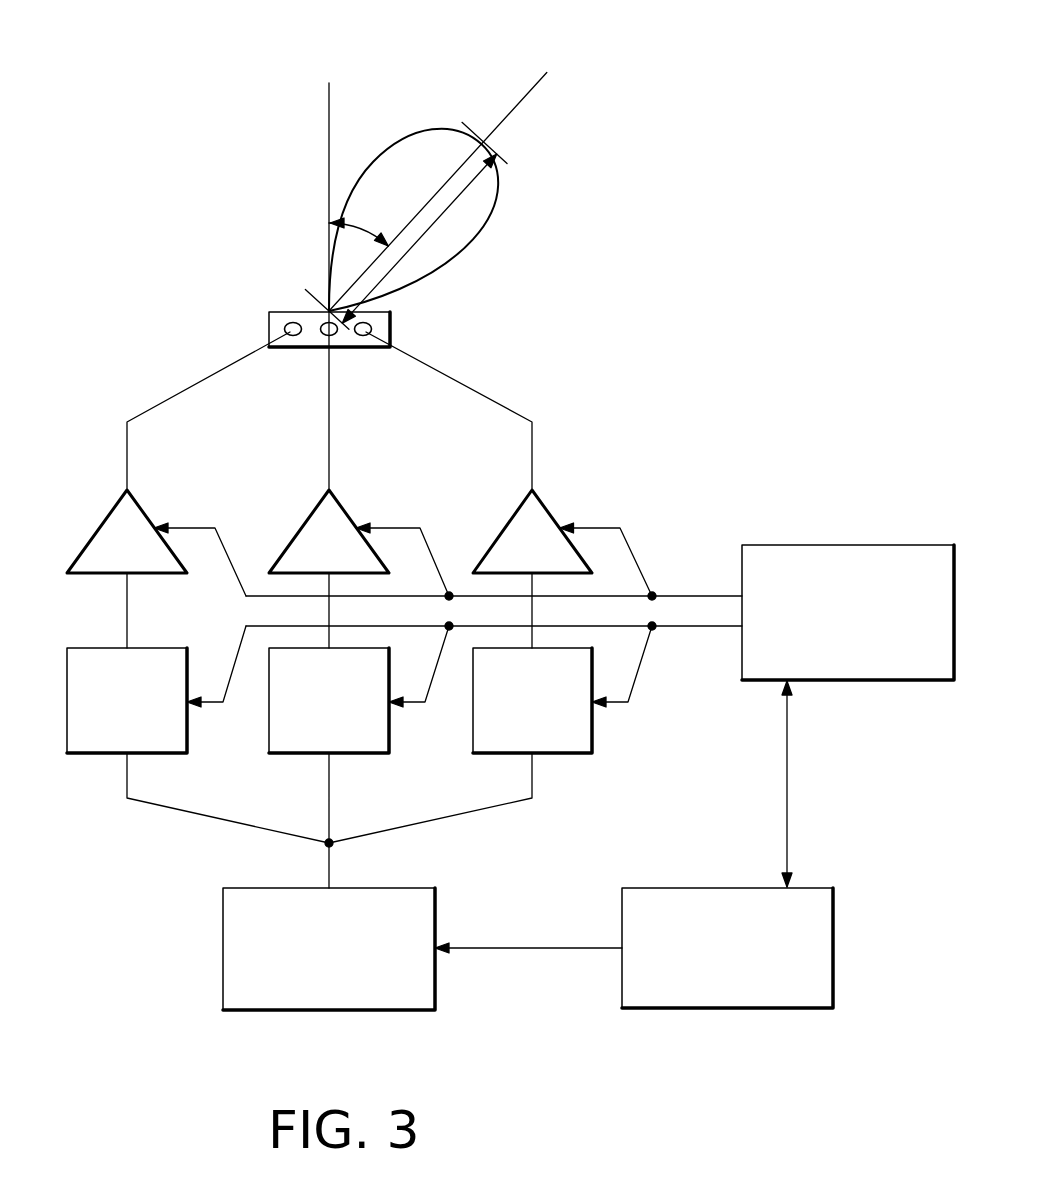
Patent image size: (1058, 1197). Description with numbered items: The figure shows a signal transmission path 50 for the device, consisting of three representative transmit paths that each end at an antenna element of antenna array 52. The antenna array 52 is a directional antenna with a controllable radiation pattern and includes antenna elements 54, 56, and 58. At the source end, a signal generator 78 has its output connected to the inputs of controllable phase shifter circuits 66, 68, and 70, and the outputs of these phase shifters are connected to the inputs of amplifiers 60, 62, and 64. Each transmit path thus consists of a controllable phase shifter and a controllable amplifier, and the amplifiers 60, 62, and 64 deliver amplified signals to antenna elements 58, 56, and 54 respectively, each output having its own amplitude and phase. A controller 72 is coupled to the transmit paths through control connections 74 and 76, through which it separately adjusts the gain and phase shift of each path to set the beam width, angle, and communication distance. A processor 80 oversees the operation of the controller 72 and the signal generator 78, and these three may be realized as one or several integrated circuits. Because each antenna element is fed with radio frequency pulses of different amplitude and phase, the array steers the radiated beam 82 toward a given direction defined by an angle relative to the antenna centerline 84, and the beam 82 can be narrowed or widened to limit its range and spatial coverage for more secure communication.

The signal transmission path 50 is at (773, 278).
The antenna array 52 is at (391, 325).
The antenna element 54 is at (367, 336).
The antenna element 56 is at (333, 336).
The antenna element 58 is at (293, 336).
The amplifier 60 is at (100, 523).
The amplifier 62 is at (302, 523).
The amplifier 64 is at (505, 523).
The controllable phase shifter circuit 66 is at (88, 755).
The controllable phase shifter circuit 68 is at (366, 755).
The controllable phase shifter circuit 70 is at (572, 755).
The controller 72 is at (892, 545).
The gain control line 74 is at (688, 586).
The phase control line 76 is at (688, 636).
The signal generator 78 is at (223, 948).
The processor 80 is at (834, 948).
The beam 82 is at (496, 206).
The antenna centerline 84 is at (329, 118).